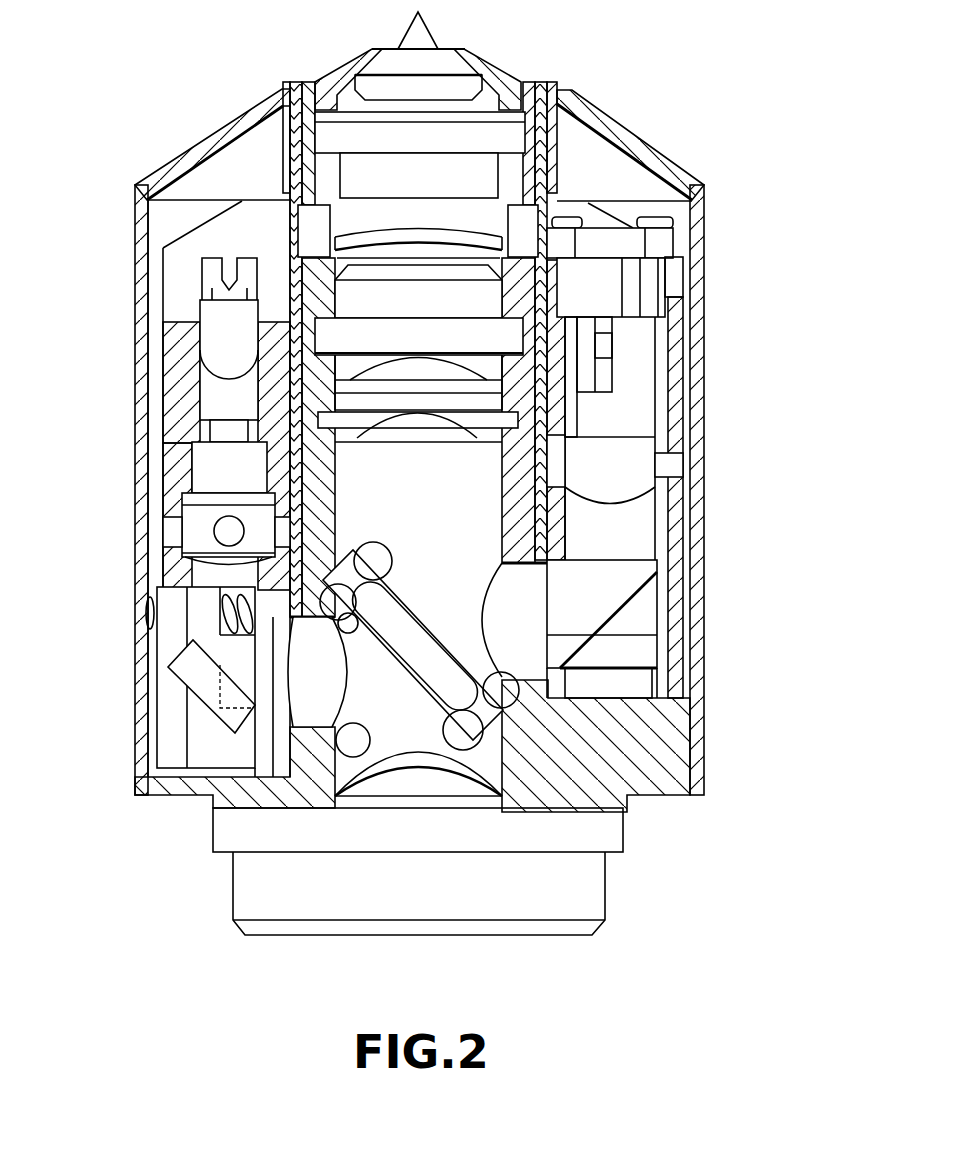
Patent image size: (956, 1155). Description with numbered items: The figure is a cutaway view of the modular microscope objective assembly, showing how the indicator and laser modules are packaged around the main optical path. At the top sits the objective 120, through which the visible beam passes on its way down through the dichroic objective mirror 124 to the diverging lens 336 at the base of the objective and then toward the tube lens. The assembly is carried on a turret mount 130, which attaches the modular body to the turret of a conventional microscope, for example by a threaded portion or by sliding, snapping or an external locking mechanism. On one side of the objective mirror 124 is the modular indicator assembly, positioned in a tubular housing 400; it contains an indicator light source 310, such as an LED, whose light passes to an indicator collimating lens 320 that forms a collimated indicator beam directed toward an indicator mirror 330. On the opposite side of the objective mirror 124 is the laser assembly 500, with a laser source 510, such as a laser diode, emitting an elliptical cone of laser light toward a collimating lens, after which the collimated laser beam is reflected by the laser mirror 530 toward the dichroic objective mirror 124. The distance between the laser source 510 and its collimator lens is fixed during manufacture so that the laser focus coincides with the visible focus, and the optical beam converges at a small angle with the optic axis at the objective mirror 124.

The tubular housing 400 is at (228, 263).
The indicator light source 310 is at (228, 350).
The indicator collimating lens 320 is at (197, 523).
The indicator mirror 330 is at (193, 663).
The turret mount 130 is at (262, 892).
The diverging lens 336 is at (412, 760).
The laser source 510 is at (597, 287).
The laser assembly 500 is at (623, 397).
The objective 120 is at (628, 457).
The laser mirror 530 is at (637, 617).
The objective mirror 124 is at (473, 707).